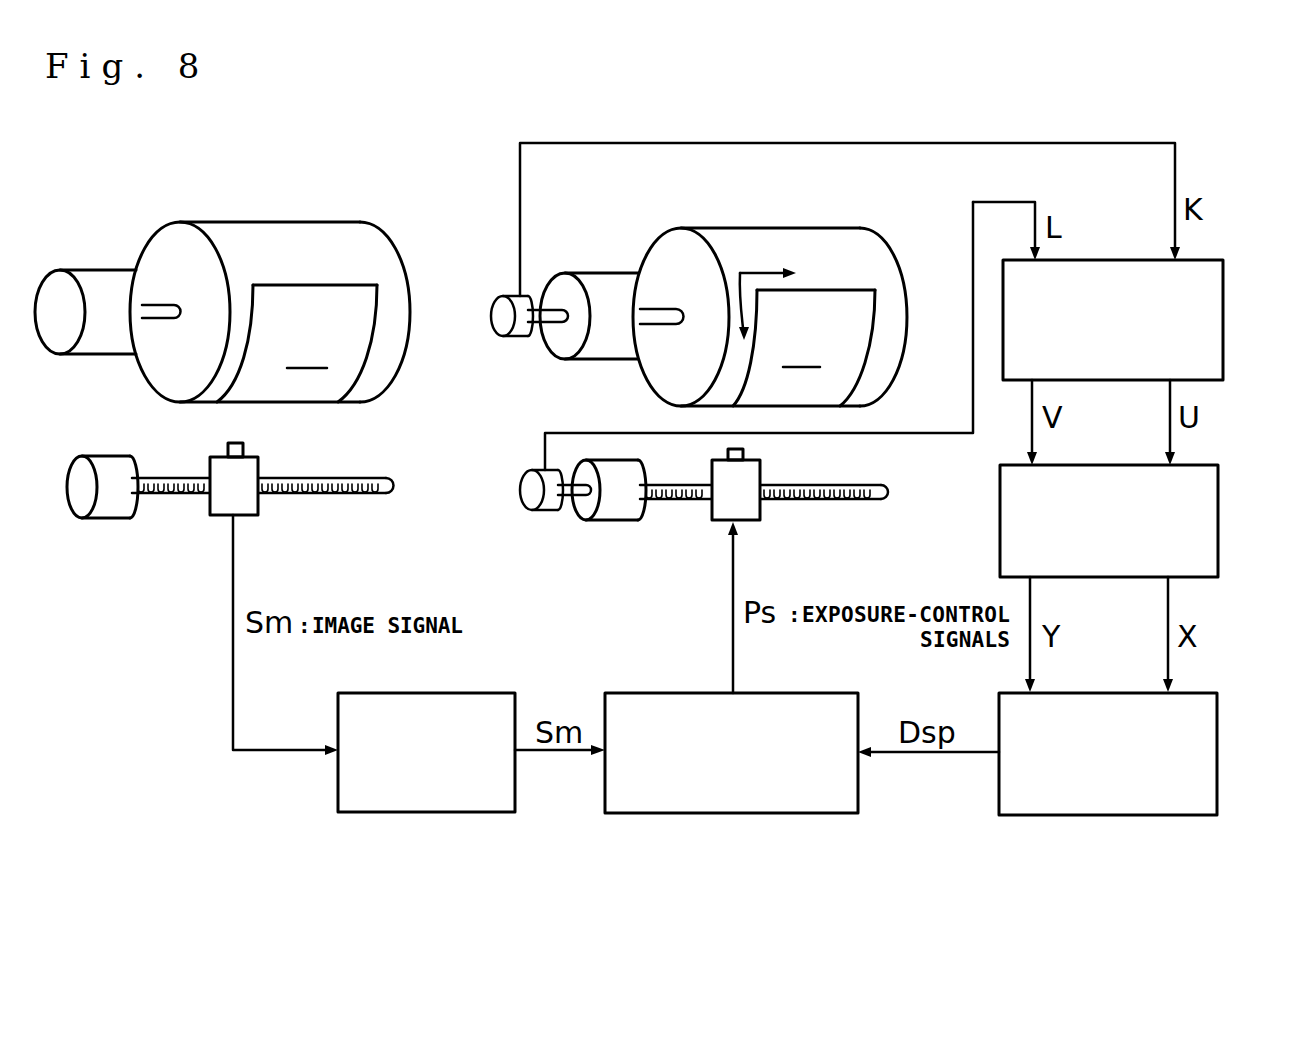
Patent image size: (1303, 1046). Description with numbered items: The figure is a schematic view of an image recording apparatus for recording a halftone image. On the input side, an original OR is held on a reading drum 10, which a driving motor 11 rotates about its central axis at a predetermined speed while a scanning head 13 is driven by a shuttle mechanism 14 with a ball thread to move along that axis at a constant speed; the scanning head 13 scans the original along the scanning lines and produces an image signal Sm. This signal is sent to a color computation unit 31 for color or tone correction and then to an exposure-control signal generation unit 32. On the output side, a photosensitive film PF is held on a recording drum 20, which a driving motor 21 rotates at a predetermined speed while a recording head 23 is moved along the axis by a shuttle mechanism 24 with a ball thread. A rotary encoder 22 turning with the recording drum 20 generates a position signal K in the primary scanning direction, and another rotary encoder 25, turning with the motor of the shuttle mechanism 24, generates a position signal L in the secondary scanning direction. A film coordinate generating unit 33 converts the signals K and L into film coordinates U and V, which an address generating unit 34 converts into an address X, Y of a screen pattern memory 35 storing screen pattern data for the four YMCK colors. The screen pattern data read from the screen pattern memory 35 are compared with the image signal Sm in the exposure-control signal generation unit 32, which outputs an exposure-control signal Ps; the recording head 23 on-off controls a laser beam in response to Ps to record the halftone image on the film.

The reading drum 10 is at (220, 222).
The driving motor 11 is at (88, 268).
The scanning head 13 is at (260, 511).
The shuttle mechanism 14 is at (114, 530).
The recording drum 20 is at (728, 228).
The driving motor 21 is at (600, 273).
The rotary encoder 22 is at (517, 337).
The recording head 23 is at (762, 507).
The shuttle mechanism 24 is at (620, 532).
The rotary encoder 25 is at (543, 511).
The color computation unit 31 is at (435, 812).
The exposure-control signal generation unit 32 is at (695, 813).
The film coordinate generating unit 33 is at (1223, 322).
The address generating unit 34 is at (1218, 520).
The screen pattern memory 35 is at (1217, 740).